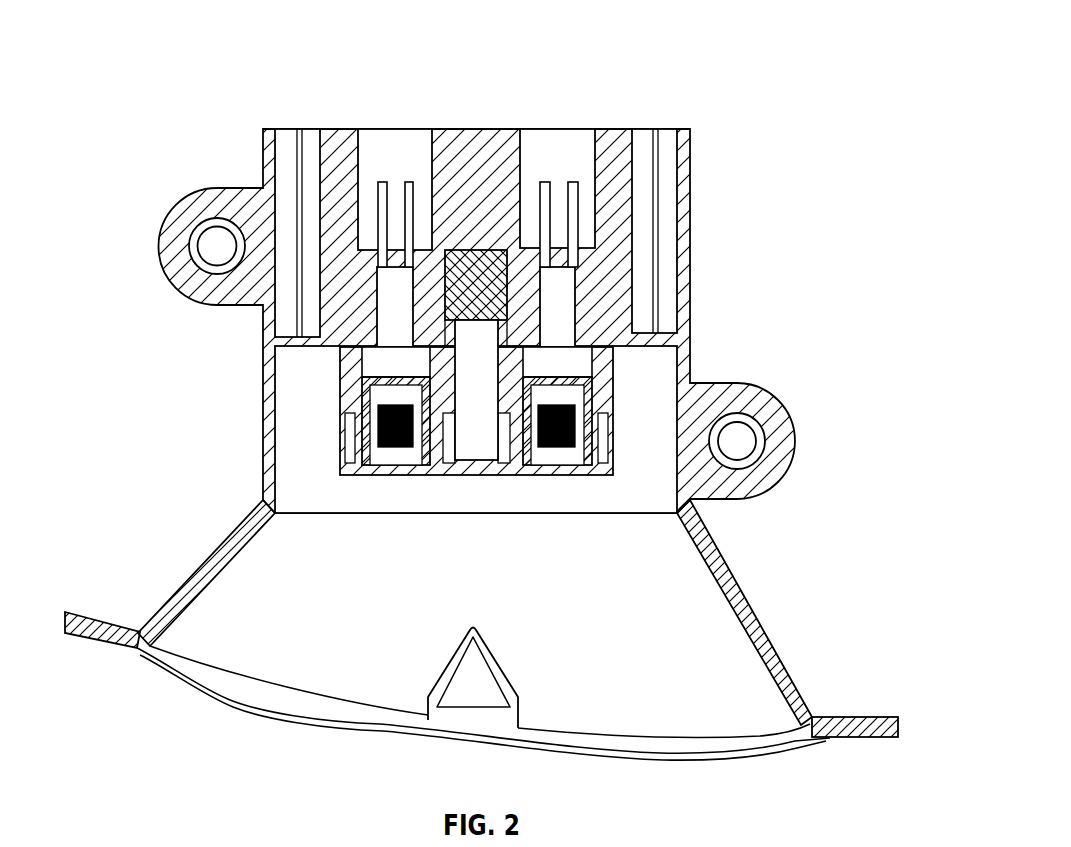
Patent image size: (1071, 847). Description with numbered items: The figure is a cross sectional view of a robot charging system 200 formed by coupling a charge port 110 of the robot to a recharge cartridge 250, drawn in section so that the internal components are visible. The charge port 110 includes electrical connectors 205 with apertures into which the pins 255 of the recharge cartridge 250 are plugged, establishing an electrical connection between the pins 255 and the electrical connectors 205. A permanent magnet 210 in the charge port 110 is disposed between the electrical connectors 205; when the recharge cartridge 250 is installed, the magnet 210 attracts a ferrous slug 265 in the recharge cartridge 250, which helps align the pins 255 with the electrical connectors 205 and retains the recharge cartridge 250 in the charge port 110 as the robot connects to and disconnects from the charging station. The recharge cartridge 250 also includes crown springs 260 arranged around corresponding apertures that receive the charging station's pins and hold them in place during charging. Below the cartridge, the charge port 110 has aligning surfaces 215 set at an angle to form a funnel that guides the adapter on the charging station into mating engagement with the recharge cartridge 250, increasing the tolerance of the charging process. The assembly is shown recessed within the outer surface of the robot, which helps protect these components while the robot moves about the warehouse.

The robot charging system 200 is at (502, 422).
The charge port 110 is at (524, 271).
The electrical connectors 205 is at (475, 212).
The permanent magnet 210 is at (507, 300).
The pins 255 is at (395, 313).
The recharge cartridge 250 is at (485, 444).
The ferrous slug 265 is at (321, 423).
The crown springs 260 is at (587, 447).
The aligning surfaces 215 is at (850, 780).